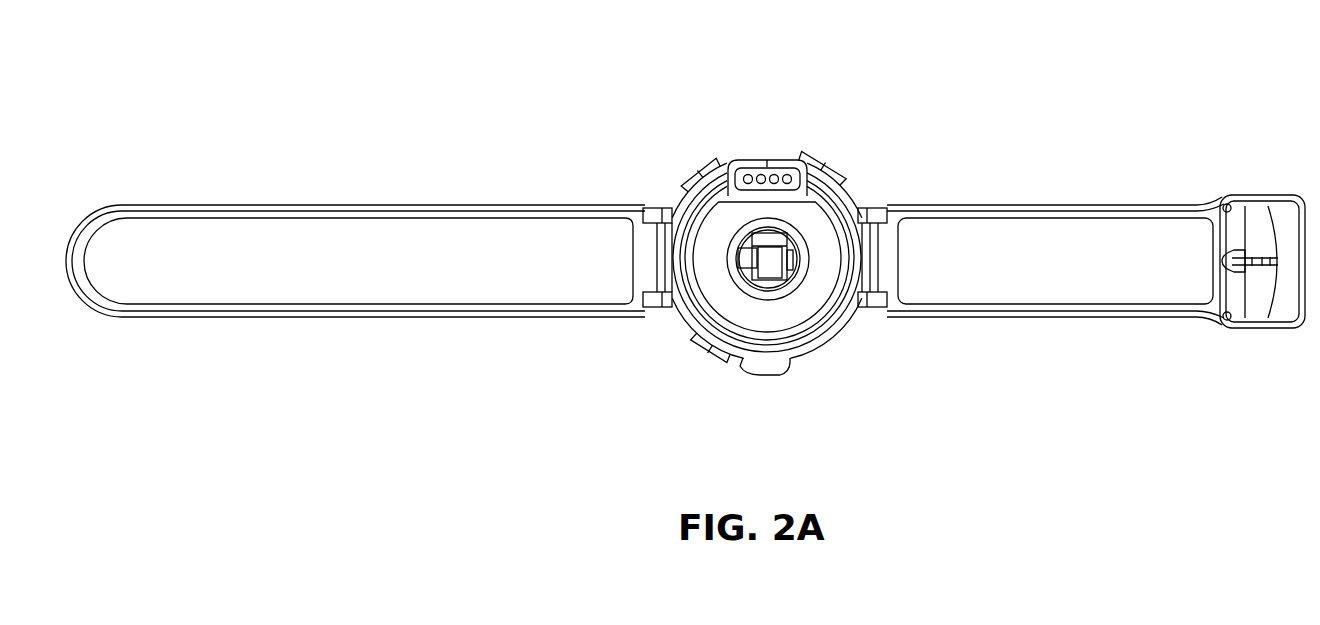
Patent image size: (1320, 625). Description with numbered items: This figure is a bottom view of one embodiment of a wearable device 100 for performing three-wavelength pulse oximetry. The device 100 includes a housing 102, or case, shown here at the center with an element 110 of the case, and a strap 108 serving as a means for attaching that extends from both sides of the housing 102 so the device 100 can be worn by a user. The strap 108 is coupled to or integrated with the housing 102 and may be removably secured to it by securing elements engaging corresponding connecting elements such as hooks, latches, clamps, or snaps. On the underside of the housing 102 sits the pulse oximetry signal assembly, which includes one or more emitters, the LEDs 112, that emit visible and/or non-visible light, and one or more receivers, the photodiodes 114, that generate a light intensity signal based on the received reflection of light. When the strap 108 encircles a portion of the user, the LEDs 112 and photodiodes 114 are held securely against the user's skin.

The wearable device 100 is at (833, 71).
The housing 102 is at (783, 374).
The strap 108 is at (460, 316).
The watch case 110 is at (805, 219).
The LEDs 112 is at (757, 230).
The photodiodes 114 is at (759, 259).